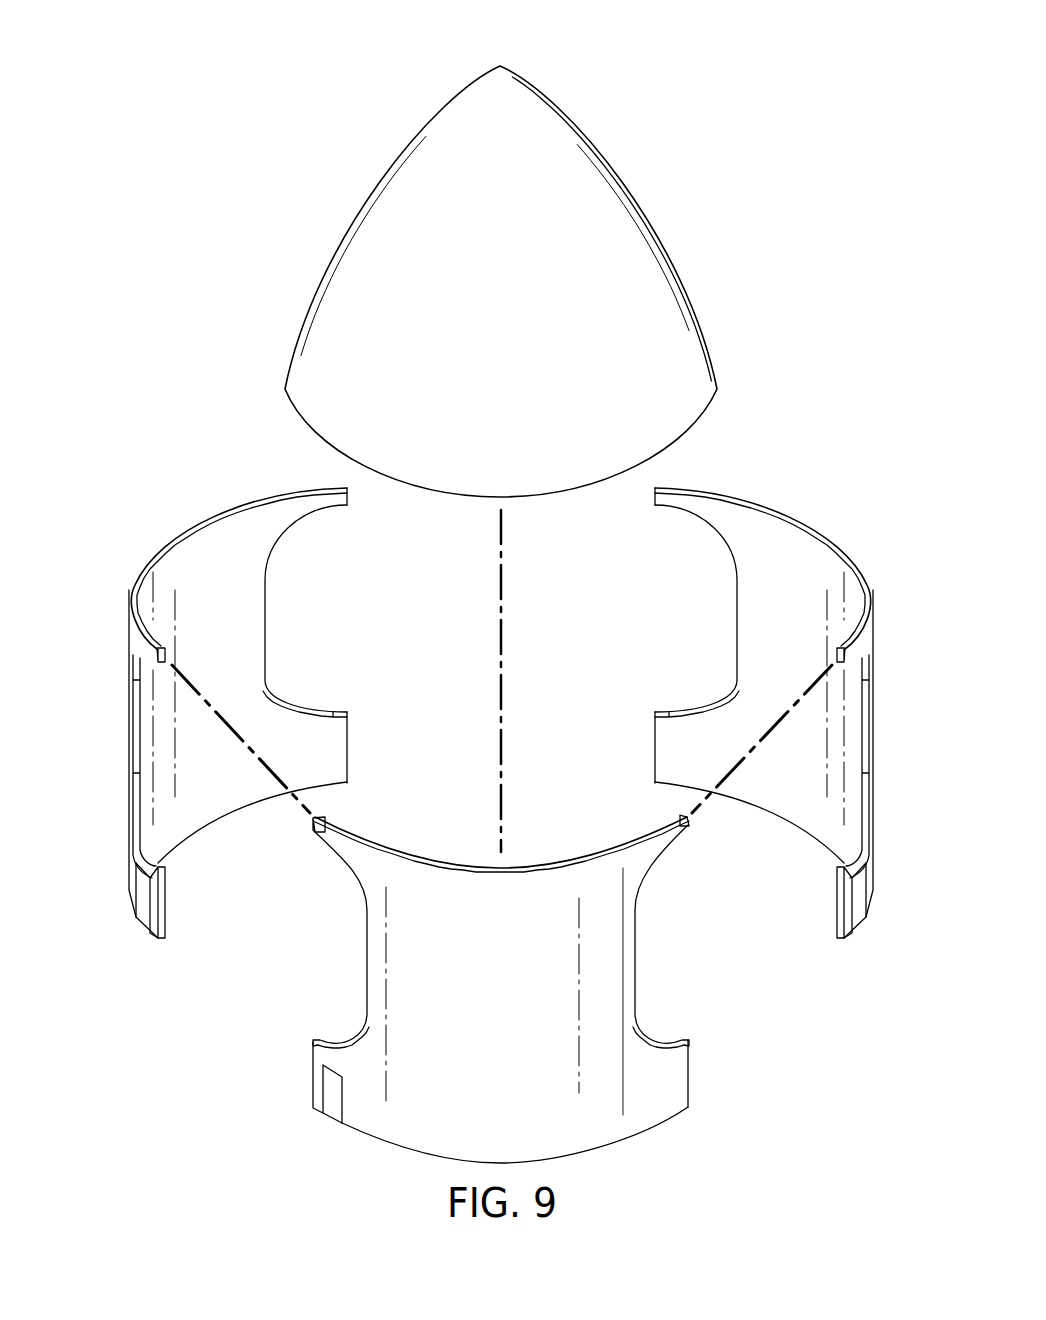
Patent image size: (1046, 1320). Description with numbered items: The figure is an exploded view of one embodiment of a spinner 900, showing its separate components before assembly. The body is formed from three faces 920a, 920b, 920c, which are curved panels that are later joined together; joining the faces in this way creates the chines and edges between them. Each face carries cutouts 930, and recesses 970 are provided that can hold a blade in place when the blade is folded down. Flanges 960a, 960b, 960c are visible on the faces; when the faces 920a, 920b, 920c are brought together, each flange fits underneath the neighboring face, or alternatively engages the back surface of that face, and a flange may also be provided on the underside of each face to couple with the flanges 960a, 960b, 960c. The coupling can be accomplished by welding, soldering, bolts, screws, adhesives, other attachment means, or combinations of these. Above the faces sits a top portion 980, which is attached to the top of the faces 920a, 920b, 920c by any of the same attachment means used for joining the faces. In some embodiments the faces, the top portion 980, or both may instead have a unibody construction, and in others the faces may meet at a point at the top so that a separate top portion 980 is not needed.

The spinner 900 is at (290, 79).
The face 920a is at (133, 638).
The face 920b is at (418, 875).
The face 920c is at (868, 638).
The cutouts 930 is at (267, 617).
The flange 960a is at (166, 653).
The flange 960b is at (313, 822).
The flange 960c is at (838, 653).
The recesses 970 is at (146, 915).
The top portion 980 is at (580, 122).